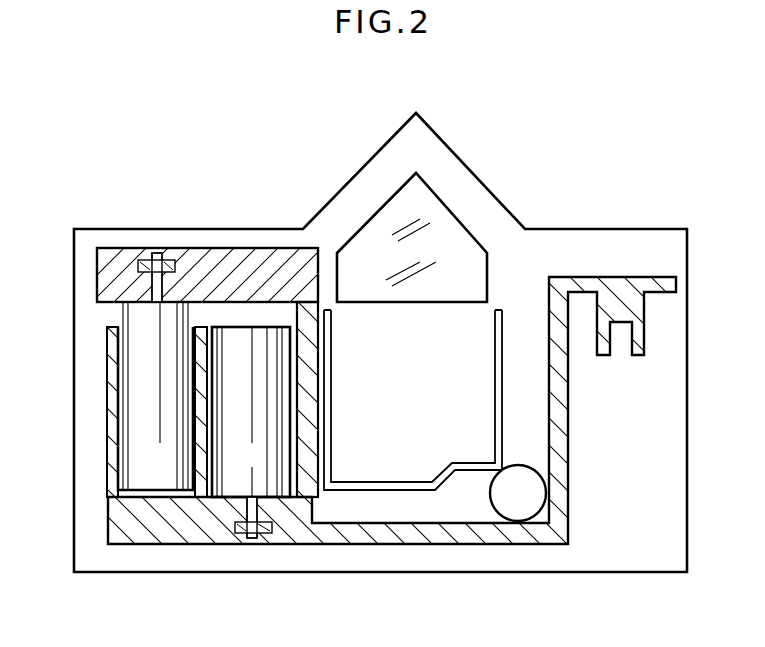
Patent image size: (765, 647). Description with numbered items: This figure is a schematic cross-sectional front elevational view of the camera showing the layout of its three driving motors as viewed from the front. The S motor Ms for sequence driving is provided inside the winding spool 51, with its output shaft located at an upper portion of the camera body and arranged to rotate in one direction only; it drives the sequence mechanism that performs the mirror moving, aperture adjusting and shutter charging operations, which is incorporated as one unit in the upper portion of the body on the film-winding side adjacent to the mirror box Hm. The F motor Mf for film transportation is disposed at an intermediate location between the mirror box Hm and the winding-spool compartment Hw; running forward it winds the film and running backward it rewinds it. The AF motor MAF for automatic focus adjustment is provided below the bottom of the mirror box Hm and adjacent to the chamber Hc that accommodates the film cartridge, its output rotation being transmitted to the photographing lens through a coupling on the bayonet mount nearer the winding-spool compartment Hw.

The winding spool 51 is at (112, 418).
The winding-spool compartment Hw is at (243, 316).
The S motor (motor for sequence driving) Ms is at (155, 396).
The F motor (motor for transporting film) Mf is at (251, 432).
The AF motor (motor for automatic focus adjustment) MAF is at (503, 496).
The mirror box Hm is at (410, 462).
The chamber Hc is at (620, 472).